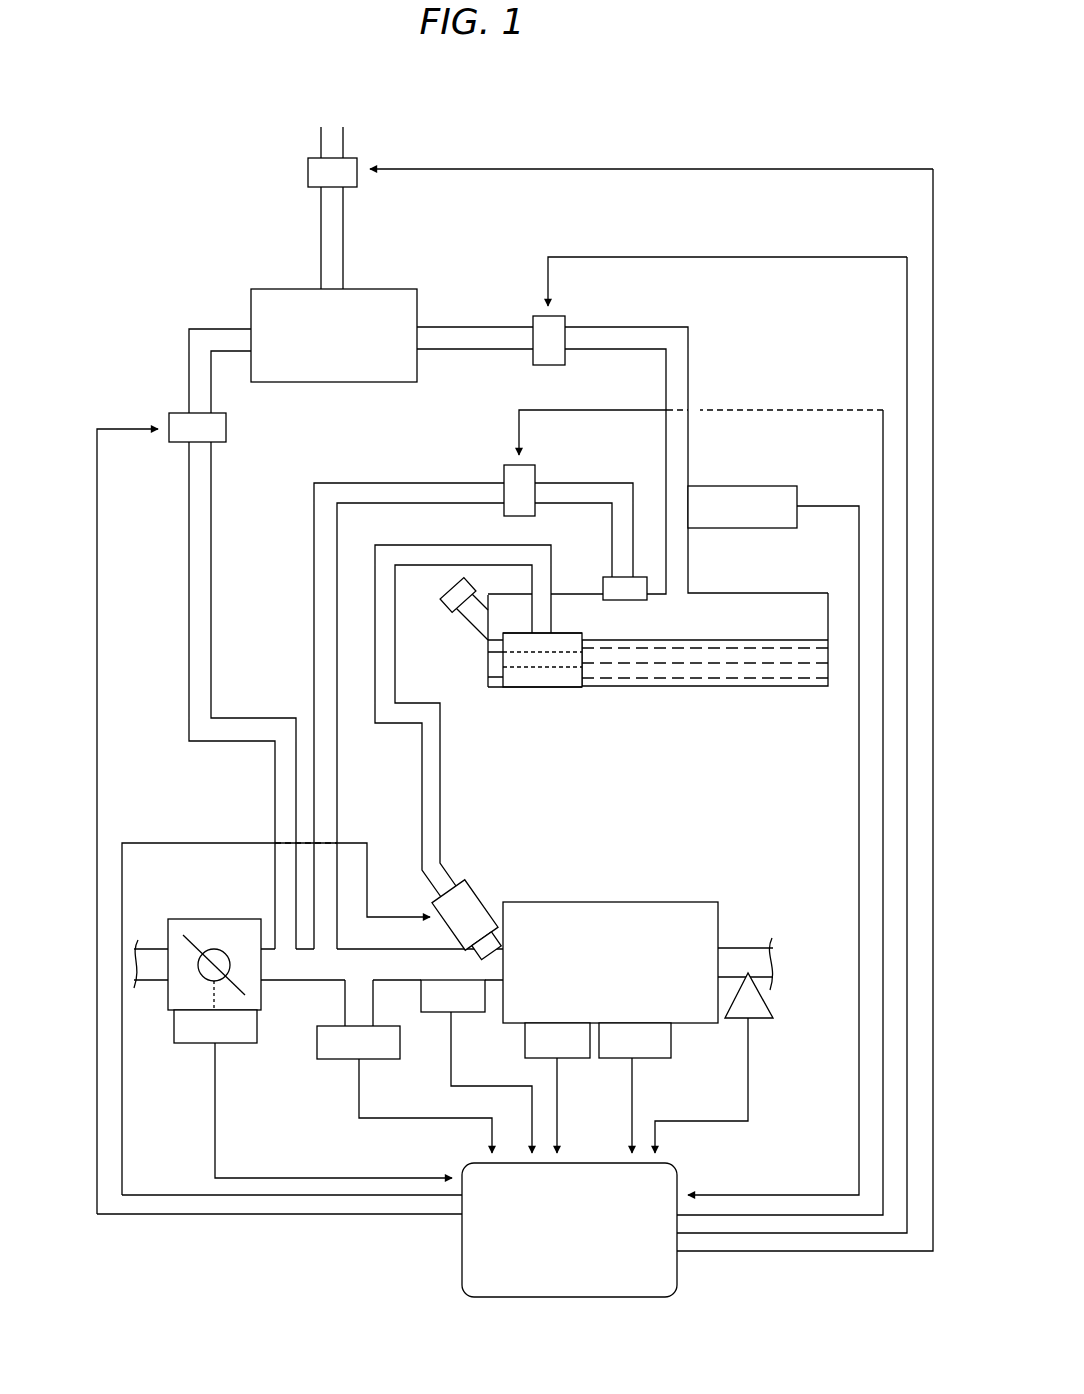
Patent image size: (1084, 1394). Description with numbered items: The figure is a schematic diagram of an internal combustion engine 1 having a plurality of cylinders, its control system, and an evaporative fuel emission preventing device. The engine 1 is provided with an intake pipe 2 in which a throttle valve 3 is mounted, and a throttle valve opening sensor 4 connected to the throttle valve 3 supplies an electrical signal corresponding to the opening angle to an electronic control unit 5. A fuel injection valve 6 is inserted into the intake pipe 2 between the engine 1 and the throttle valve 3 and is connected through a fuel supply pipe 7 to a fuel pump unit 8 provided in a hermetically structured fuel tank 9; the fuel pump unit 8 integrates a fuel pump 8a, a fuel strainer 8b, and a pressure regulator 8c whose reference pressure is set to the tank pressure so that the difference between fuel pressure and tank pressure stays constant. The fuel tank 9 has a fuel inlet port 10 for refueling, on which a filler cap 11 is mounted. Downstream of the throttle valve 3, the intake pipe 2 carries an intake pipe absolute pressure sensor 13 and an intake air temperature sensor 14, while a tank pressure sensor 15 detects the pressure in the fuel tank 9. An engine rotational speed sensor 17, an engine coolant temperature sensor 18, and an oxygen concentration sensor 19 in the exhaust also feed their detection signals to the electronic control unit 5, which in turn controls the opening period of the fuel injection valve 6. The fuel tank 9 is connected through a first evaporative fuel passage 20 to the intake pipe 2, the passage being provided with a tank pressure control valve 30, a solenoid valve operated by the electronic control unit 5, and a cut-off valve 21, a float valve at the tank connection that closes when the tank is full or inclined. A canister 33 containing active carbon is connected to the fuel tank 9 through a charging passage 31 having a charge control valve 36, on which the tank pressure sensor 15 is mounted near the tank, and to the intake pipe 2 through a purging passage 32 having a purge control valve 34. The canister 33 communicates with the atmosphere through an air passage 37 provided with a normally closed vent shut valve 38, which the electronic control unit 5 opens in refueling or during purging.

The internal combustion engine 1 is at (628, 902).
The intake pipe 2 is at (289, 982).
The throttle valve 3 is at (196, 935).
The throttle valve opening sensor 4 is at (199, 1043).
The electronic control unit 5 is at (677, 1268).
The fuel injection valve 6 is at (478, 886).
The fuel supply pipe 7 is at (441, 823).
The fuel pump unit 8 is at (531, 679).
The fuel pump 8a is at (540, 690).
The fuel strainer 8b is at (503, 665).
The pressure regulator 8c is at (560, 635).
The fuel tank 9 is at (663, 692).
The fuel inlet port 10 is at (476, 621).
The filler cap 11 is at (444, 606).
The intake pipe absolute pressure sensor 13 is at (341, 1060).
The intake air temperature sensor 14 is at (471, 1012).
The tank pressure sensor 15 is at (745, 486).
The engine rotational speed sensor 17 is at (583, 1060).
The engine coolant temperature sensor 18 is at (641, 1060).
The oxygen concentration sensor 19 is at (775, 1000).
The first evaporative fuel passage 20 is at (314, 575).
The cut-off valve 21 is at (612, 577).
The tank pressure control valve 30 is at (504, 468).
The charging passage 31 is at (688, 362).
The purging passage 32 is at (189, 356).
The canister 33 is at (383, 288).
The purge control valve 34 is at (226, 429).
The charge control valve 36 is at (538, 316).
The air passage 37 is at (321, 218).
The vent shut valve 38 is at (352, 157).